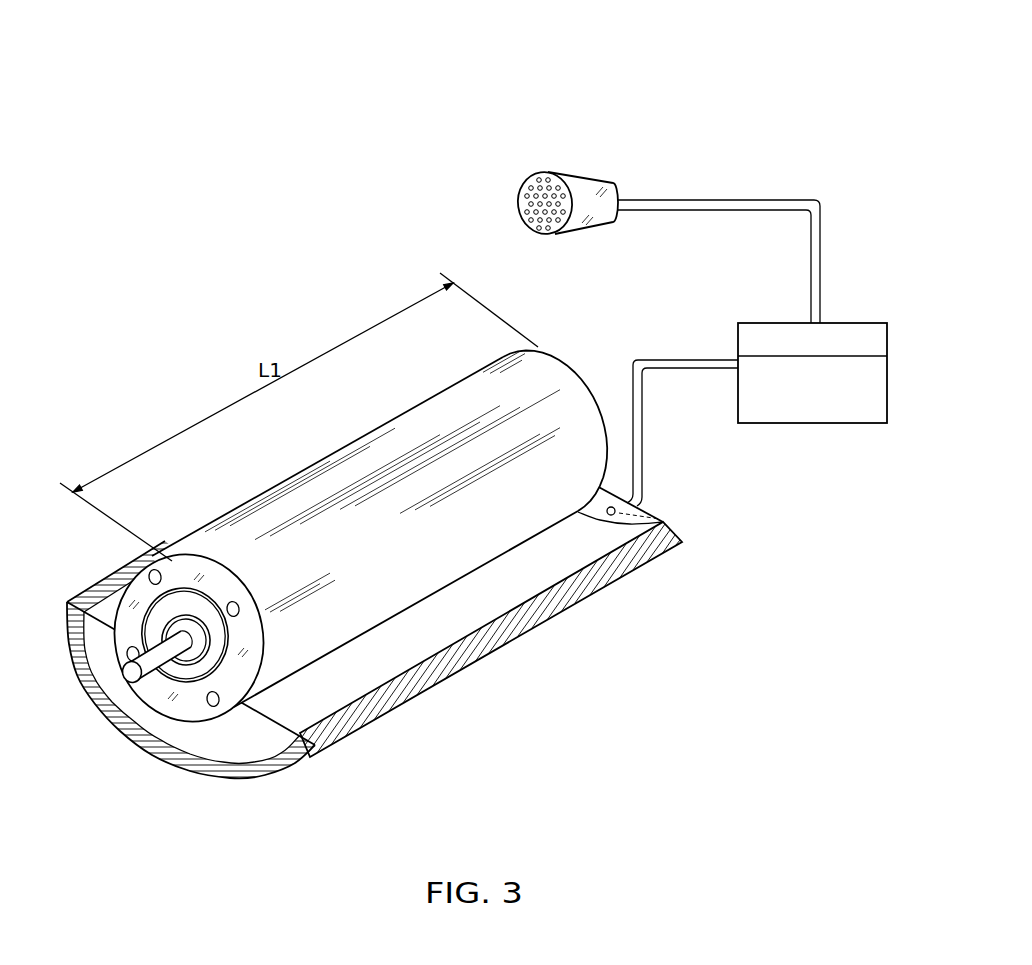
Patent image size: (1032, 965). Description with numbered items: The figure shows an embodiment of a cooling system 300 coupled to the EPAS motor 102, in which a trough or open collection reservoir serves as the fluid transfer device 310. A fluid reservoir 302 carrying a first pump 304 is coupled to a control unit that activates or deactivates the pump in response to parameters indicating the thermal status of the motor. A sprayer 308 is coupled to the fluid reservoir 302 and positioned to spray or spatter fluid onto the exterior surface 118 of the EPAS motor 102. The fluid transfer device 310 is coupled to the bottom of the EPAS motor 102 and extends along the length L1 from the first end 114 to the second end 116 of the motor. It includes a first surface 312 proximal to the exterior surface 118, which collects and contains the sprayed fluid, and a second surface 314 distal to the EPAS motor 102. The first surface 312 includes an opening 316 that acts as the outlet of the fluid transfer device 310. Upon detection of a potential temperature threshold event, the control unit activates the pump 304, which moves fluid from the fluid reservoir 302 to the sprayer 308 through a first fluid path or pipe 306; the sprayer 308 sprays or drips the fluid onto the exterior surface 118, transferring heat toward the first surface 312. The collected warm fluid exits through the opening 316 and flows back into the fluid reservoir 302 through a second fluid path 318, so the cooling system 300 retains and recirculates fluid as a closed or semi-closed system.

The cooling system 300 is at (755, 57).
The fluid reservoir 302 is at (853, 424).
The first pump 304 is at (857, 323).
The first fluid path or pipe 306 is at (797, 199).
The sprayer 308 is at (591, 177).
The fluid transfer device 310 is at (225, 778).
The first surface 312 is at (360, 665).
The second surface 314 is at (309, 765).
The opening 316 is at (663, 522).
The second fluid path 318 is at (684, 369).
The EPAS motor 102 is at (353, 525).
The first end 114 is at (588, 388).
The second end 116 is at (176, 552).
The exterior surface 118 is at (435, 437).